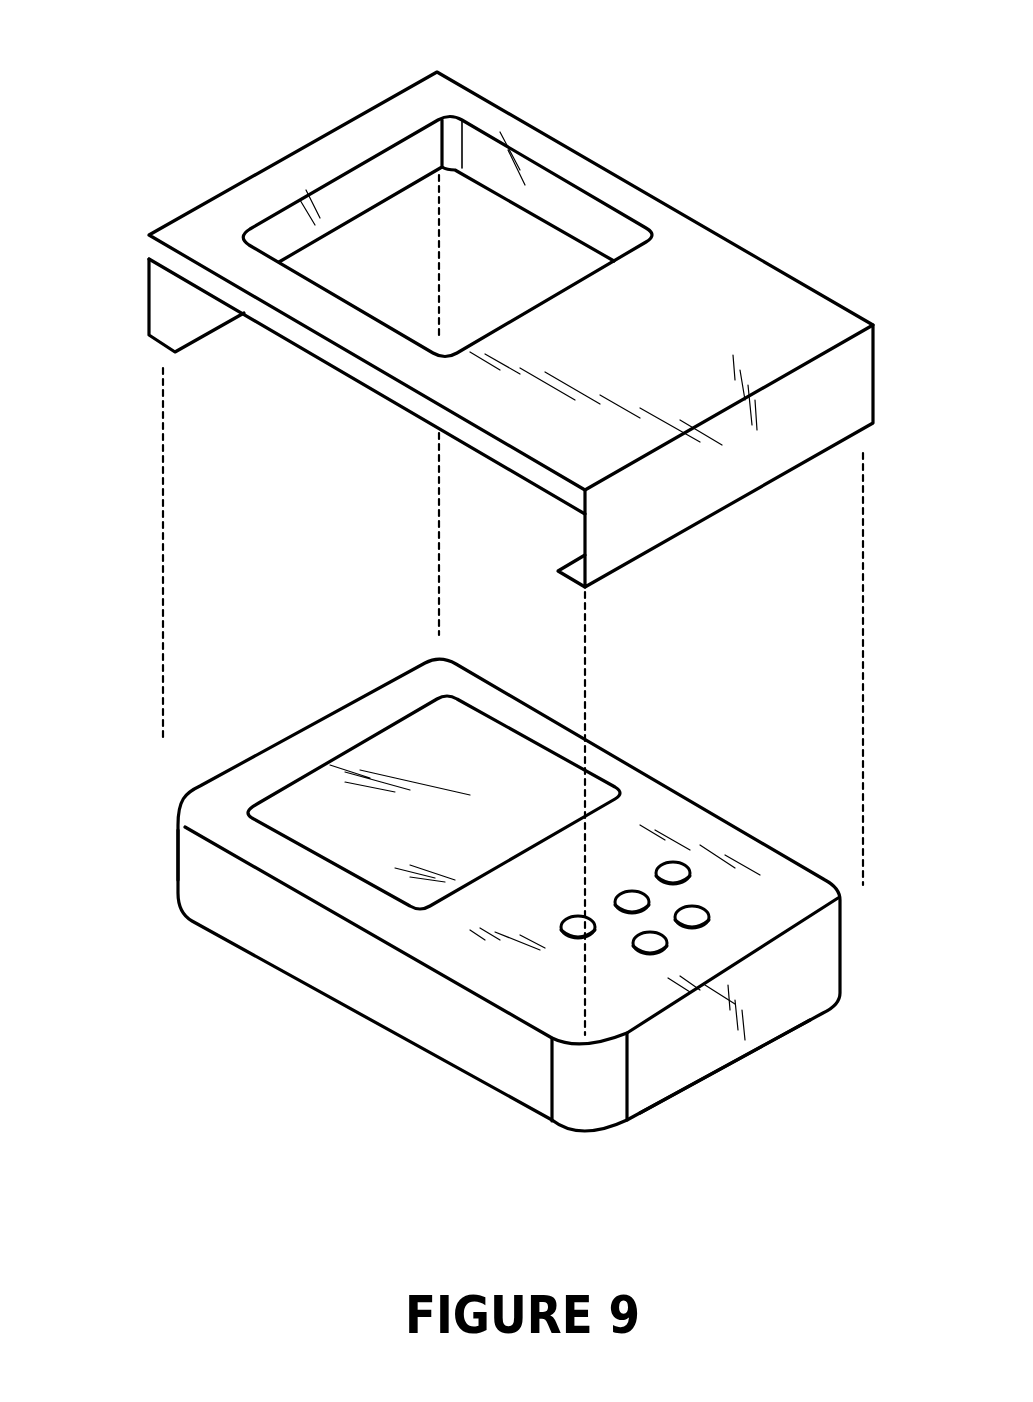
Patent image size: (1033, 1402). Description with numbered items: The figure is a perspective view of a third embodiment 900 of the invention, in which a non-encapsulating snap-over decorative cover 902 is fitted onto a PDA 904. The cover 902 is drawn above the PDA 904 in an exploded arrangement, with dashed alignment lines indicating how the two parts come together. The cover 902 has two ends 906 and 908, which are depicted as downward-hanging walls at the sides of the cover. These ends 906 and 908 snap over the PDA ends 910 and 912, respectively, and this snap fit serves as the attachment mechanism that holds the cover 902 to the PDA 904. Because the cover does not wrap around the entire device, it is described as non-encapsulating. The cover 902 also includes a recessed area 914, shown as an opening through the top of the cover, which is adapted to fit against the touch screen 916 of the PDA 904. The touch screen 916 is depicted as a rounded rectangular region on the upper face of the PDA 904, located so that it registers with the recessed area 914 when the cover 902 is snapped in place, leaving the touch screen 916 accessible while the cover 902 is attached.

The embodiment 900 is at (666, 200).
The decorative cover 902 is at (742, 297).
The PDA 904 is at (338, 972).
The end 906 is at (147, 290).
The end 908 is at (685, 503).
The PDA end 910 is at (175, 869).
The PDA end 912 is at (672, 1057).
The recessed area 914 is at (468, 220).
The touch screen 916 is at (395, 747).